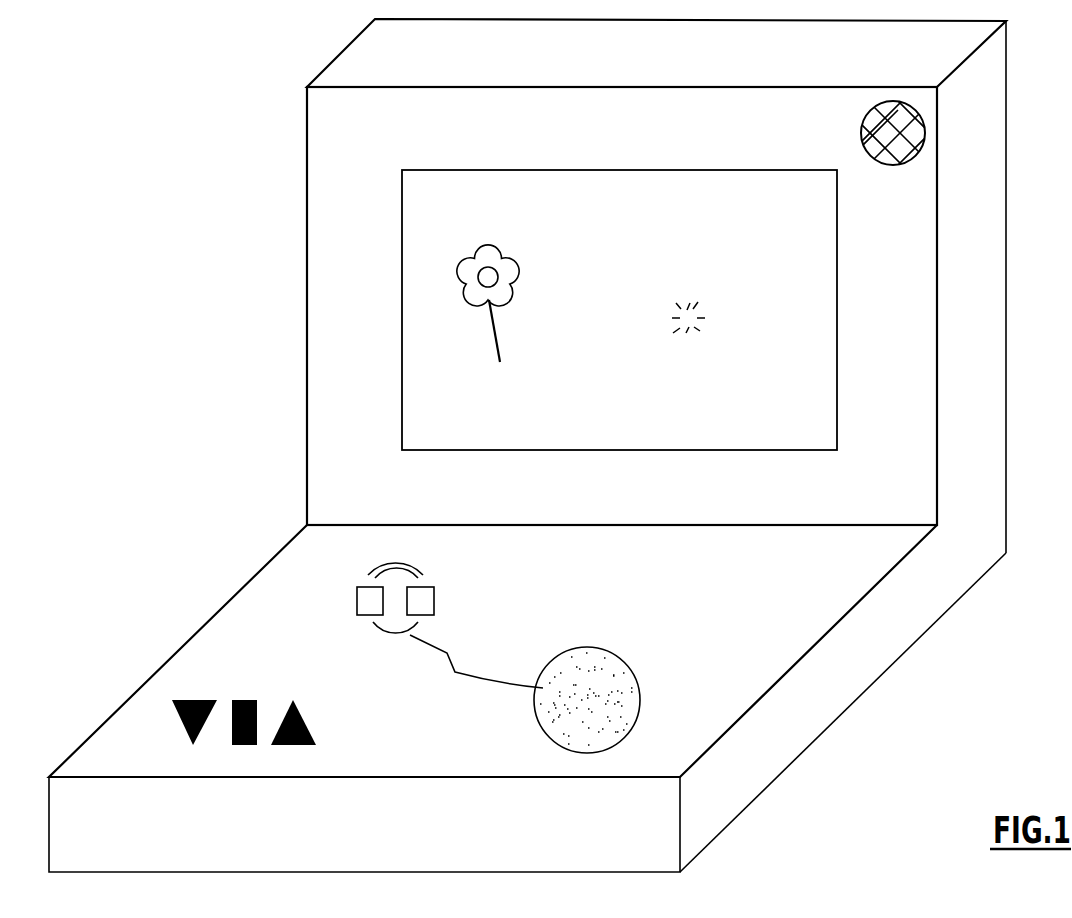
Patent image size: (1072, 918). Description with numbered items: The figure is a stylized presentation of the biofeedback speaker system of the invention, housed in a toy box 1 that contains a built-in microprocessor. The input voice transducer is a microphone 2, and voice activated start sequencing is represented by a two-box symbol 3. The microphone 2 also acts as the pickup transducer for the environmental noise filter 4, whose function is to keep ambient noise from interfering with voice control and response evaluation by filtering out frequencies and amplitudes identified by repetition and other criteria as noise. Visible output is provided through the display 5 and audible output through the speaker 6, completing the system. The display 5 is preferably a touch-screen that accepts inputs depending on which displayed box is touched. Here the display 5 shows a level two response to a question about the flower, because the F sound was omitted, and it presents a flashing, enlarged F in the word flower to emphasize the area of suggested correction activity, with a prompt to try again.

The toy box 1 is at (900, 627).
The microphone 2 is at (636, 727).
The two-box symbol 3 is at (344, 588).
The environmental noise filter 4 is at (217, 684).
The display 5 is at (808, 314).
The speaker 6 is at (920, 125).